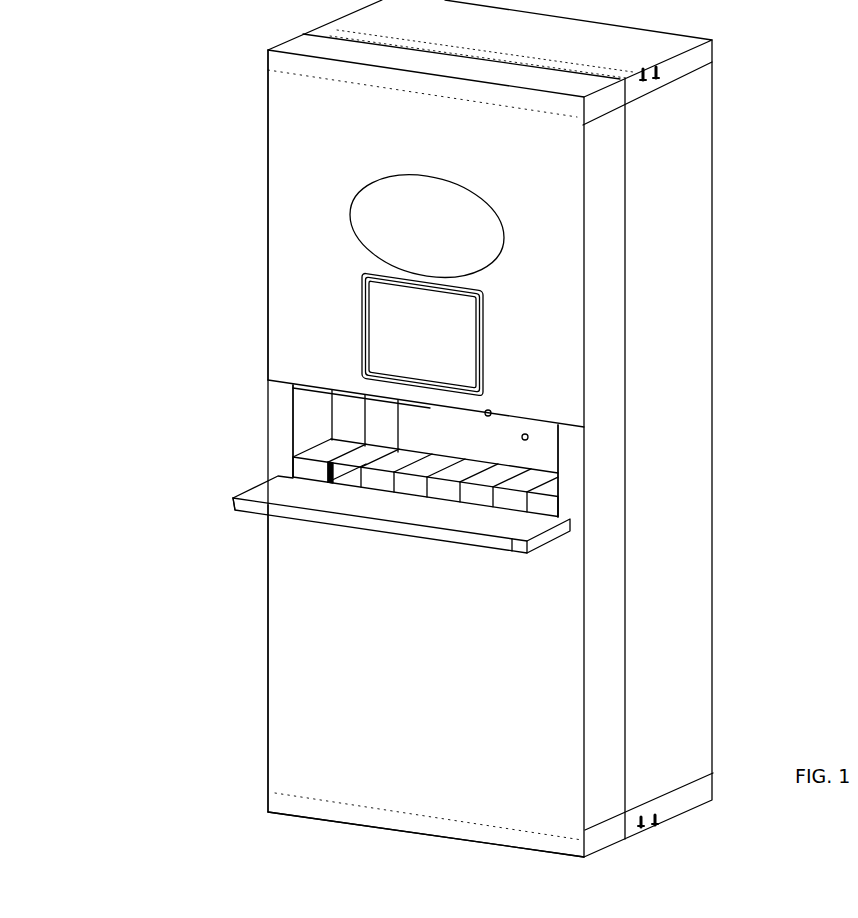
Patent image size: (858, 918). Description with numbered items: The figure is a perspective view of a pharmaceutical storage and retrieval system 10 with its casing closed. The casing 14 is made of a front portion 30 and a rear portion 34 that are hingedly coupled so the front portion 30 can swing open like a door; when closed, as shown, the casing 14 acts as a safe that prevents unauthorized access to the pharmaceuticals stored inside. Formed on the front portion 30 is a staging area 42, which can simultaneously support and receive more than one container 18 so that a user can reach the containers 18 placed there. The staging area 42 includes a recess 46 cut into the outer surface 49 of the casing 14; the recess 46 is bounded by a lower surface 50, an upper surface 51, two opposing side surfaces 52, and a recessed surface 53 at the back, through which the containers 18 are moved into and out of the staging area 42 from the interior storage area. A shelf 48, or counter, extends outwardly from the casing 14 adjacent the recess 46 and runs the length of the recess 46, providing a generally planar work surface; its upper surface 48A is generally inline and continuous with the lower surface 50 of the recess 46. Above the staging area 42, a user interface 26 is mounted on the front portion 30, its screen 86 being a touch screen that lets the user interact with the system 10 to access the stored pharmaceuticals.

The pharmaceutical storage and retrieval system 10 is at (84, 101).
The casing 14 is at (704, 138).
The containers 18 is at (335, 440).
The user interface 26 is at (367, 284).
The front portion 30 is at (278, 138).
The rear portion 34 is at (704, 632).
The staging area 42 is at (248, 423).
The recess 46 is at (549, 437).
The shelf 48 is at (417, 530).
The upper surface of the shelf 48A is at (262, 489).
The outer surface 49 is at (288, 690).
The lower surface 50 is at (341, 478).
The upper surface 51 is at (488, 413).
The side surfaces 52 is at (296, 411).
The recessed surface 53 is at (525, 437).
The screen 86 is at (373, 336).